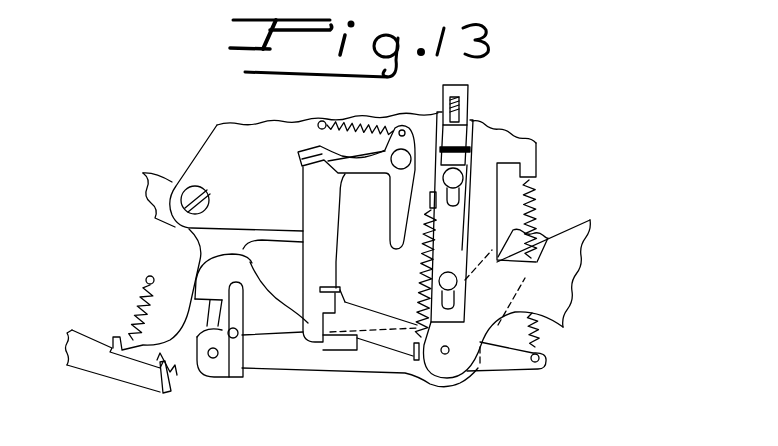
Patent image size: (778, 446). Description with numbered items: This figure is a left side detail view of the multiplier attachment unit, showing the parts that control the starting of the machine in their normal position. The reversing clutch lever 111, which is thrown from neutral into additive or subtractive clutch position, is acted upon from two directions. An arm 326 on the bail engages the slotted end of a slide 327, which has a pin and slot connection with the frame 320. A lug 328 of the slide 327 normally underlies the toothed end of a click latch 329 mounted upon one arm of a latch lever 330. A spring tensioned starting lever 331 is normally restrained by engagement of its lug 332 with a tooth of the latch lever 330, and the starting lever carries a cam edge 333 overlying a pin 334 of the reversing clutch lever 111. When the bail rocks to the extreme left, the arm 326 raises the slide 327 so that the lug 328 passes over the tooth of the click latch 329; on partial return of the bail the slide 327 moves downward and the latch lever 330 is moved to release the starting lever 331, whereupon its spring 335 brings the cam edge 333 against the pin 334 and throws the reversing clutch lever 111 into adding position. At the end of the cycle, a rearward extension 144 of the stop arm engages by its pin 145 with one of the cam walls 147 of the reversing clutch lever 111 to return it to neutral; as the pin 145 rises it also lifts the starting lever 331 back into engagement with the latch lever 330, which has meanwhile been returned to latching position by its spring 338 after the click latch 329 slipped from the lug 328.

The reversing clutch lever 111 is at (157, 242).
The rearward extension 144 is at (342, 366).
The pin 145 is at (213, 358).
The cam walls 147 is at (172, 404).
The frame 320 is at (517, 150).
The arm 326 is at (457, 104).
The slide 327 is at (465, 90).
The lug 328 is at (395, 292).
The click latch 329 is at (379, 193).
The latch lever 330 is at (313, 195).
The starting lever 331 is at (278, 307).
The lug 332 is at (340, 283).
The cam edge 333 is at (245, 294).
The pin 334 is at (176, 305).
The spring 335 is at (537, 196).
The spring 338 is at (364, 120).